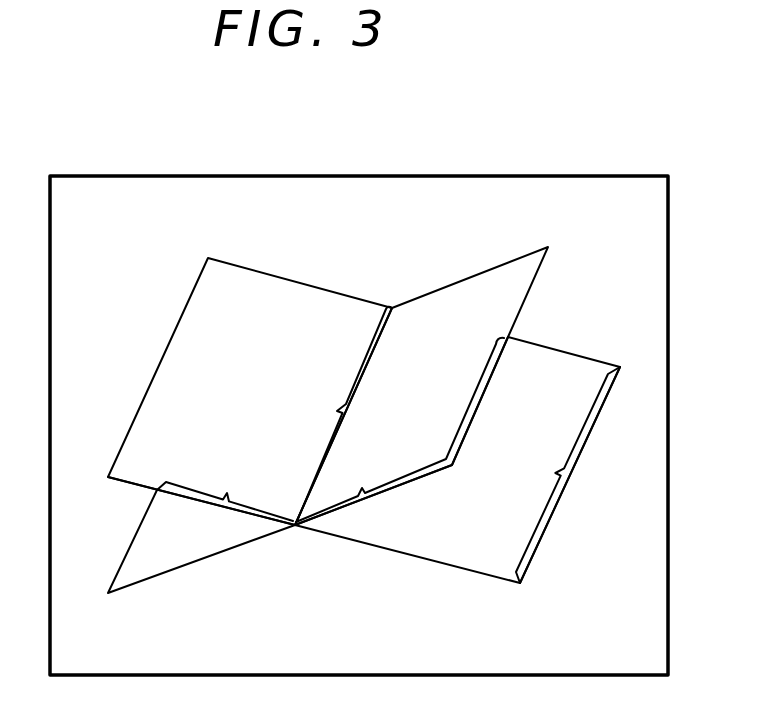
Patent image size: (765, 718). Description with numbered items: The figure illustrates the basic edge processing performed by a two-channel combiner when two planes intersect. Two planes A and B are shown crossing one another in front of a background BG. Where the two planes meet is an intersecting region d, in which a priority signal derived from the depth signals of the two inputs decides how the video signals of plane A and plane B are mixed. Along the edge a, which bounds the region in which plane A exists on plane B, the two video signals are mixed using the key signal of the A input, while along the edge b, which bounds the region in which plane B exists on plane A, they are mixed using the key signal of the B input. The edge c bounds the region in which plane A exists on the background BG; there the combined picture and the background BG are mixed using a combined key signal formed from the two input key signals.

The plane A is at (250, 391).
The plane B is at (421, 386).
The edge a is at (201, 490).
The edge b is at (401, 431).
The edge c is at (568, 475).
The intersecting region d is at (343, 416).
The background BG is at (359, 425).